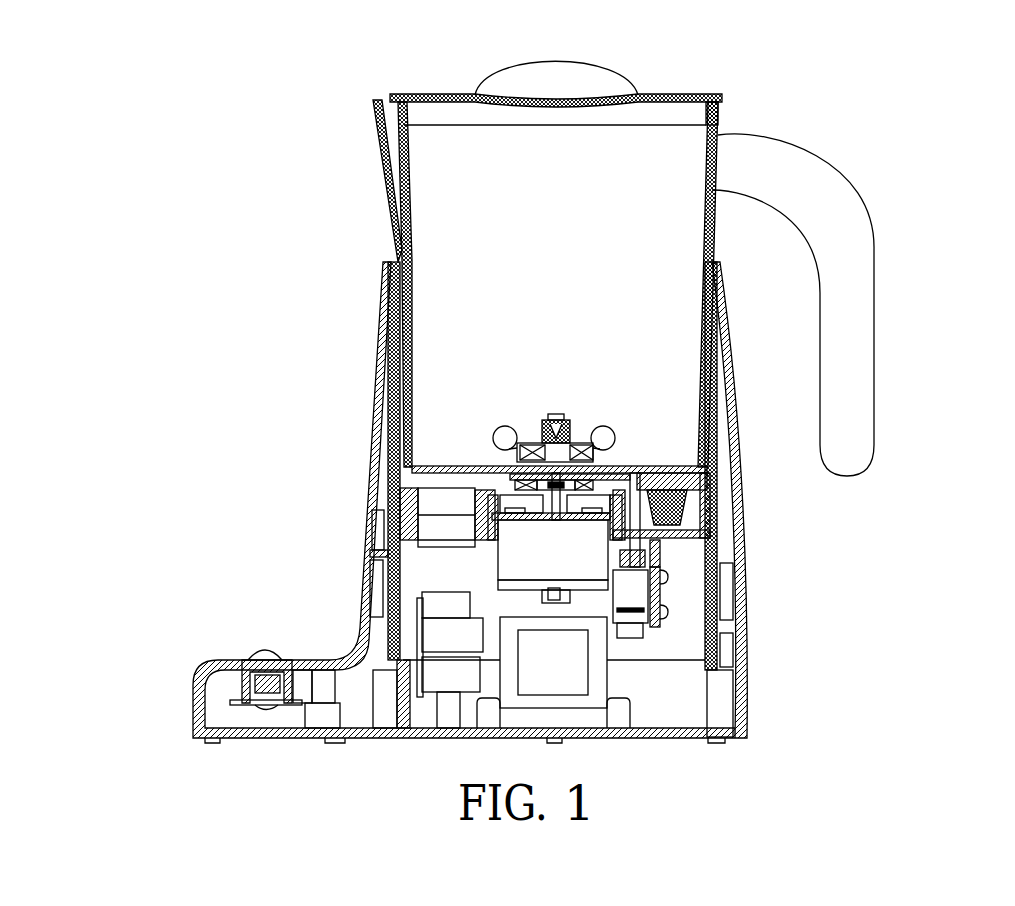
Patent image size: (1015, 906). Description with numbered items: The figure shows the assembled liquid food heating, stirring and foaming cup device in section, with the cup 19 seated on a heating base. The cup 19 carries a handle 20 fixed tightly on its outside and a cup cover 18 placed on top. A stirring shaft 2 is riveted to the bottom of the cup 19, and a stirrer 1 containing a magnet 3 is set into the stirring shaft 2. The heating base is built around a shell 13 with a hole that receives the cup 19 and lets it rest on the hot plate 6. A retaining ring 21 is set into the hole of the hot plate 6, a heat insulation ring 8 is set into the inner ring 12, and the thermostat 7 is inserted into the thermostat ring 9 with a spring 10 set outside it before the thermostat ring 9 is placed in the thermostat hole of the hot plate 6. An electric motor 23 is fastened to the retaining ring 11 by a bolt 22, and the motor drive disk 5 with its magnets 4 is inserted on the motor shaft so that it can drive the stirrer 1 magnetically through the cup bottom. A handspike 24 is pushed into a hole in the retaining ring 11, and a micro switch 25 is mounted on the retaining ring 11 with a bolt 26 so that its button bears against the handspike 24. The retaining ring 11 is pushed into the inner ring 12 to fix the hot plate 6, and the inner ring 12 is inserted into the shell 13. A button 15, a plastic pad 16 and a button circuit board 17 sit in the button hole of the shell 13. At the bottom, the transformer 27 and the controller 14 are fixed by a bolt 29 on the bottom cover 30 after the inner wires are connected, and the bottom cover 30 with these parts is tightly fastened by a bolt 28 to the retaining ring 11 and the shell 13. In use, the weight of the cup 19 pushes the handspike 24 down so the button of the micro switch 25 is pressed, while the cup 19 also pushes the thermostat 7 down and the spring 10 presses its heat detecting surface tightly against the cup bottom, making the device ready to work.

The stirrer 1 is at (548, 425).
The stirring shaft 2 is at (540, 442).
The magnet 3 is at (520, 453).
The magnets 4 is at (500, 467).
The motor drive disk 5 is at (460, 478).
The hot plate 6 is at (440, 470).
The thermostat 7 is at (405, 460).
The heat insulation ring 8 is at (396, 472).
The thermostat ring 9 is at (393, 494).
The spring 10 is at (390, 505).
The retaining ring 11 is at (385, 540).
The inner ring 12 is at (365, 585).
The shell 13 is at (437, 636).
The controller 14 is at (360, 635).
The button 15 is at (377, 680).
The plastic pad 16 is at (290, 690).
The button circuit board 17 is at (223, 683).
The cup cover 18 is at (718, 108).
The cup 19 is at (703, 228).
The handle 20 is at (833, 243).
The retaining ring 21 is at (612, 466).
The bolt 22 is at (596, 502).
The electric motor 23 is at (665, 492).
The handspike 24 is at (592, 545).
The micro switch 25 is at (633, 587).
The bolt 26 is at (593, 662).
The transformer 27 is at (663, 613).
The bolt 28 is at (720, 652).
The bolt 29 is at (630, 700).
The bottom cover 30 is at (707, 708).